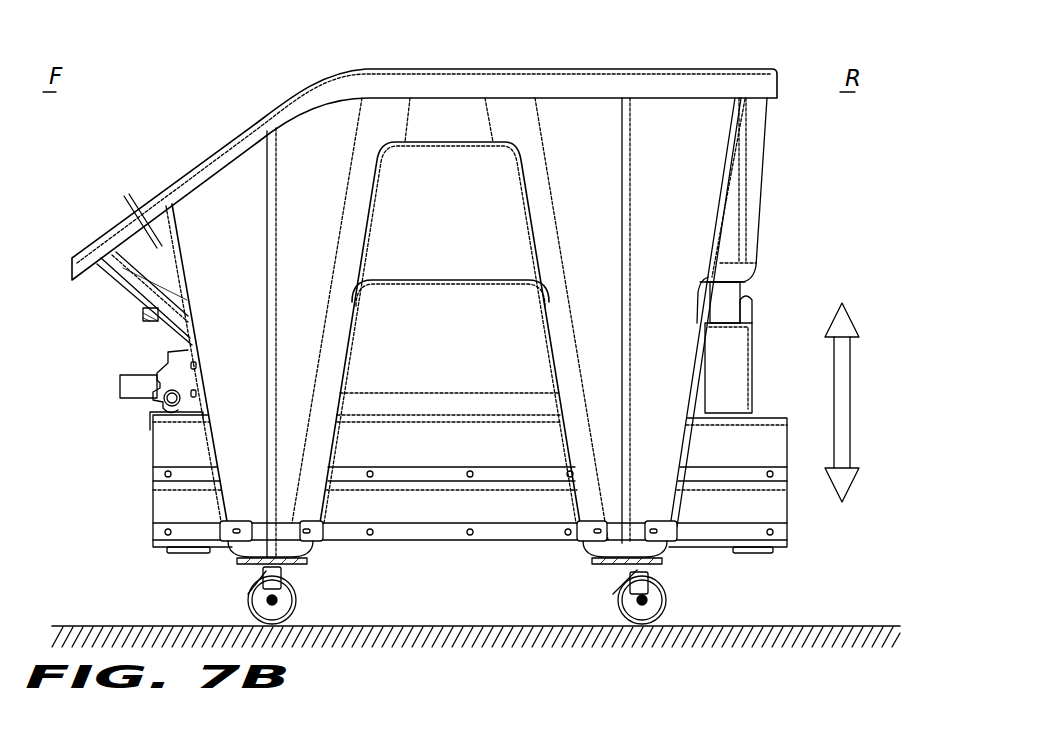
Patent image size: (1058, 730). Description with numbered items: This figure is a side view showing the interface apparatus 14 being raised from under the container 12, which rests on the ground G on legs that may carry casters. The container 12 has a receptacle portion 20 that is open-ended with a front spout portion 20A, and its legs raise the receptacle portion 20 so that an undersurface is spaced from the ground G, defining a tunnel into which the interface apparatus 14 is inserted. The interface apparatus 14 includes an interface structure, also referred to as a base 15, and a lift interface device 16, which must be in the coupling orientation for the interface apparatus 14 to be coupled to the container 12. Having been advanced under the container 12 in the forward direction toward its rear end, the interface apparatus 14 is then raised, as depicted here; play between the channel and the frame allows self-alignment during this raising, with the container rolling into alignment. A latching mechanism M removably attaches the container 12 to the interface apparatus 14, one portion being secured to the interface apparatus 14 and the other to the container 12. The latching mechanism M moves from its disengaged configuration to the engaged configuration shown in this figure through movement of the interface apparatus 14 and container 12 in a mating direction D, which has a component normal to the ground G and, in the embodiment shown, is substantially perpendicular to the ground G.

The container 12 is at (704, 50).
The front spout portion 20A is at (133, 208).
The receptacle portion 20 is at (685, 163).
The lift interface device 16 is at (122, 383).
The interface structure (base) 15 is at (153, 497).
The interface apparatus 14 is at (800, 540).
The latching mechanism M is at (786, 300).
The mating direction D is at (850, 403).
The ground G is at (832, 638).